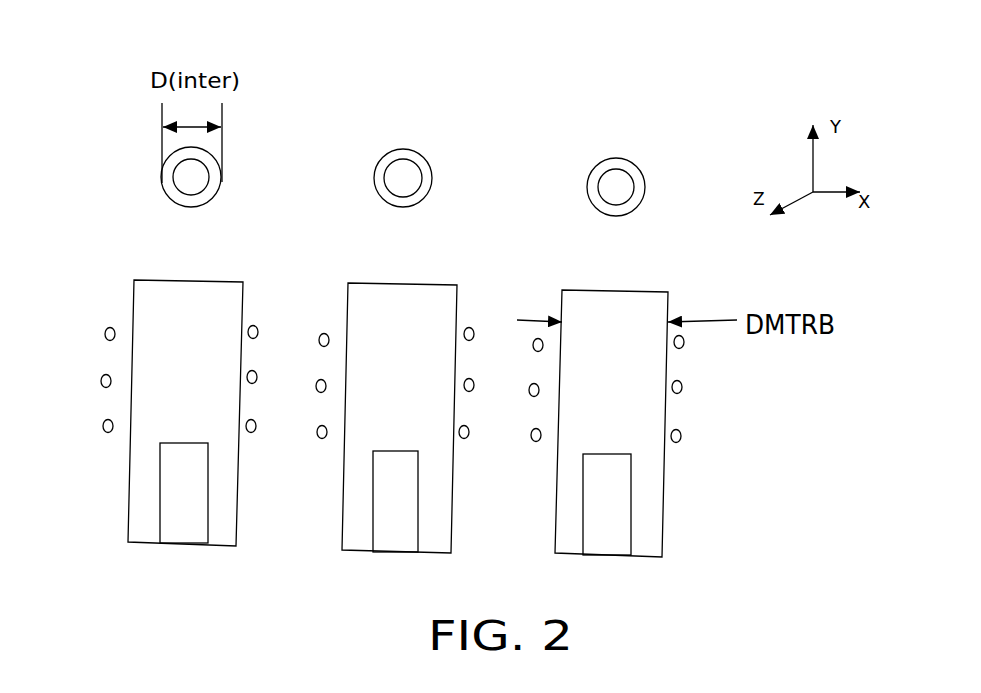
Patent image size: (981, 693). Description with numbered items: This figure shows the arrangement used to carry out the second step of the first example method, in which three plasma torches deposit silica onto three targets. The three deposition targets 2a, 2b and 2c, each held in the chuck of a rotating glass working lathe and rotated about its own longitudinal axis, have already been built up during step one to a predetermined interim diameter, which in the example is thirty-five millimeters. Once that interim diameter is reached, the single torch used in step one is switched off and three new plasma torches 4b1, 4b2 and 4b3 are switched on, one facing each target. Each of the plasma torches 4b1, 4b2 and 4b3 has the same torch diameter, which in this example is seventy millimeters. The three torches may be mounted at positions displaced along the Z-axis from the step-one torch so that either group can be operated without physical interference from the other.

The deposition target 2a is at (232, 158).
The deposition target 2b is at (368, 177).
The deposition target 2c is at (588, 175).
The plasma torch 4b1 is at (113, 535).
The plasma torch 4b2 is at (333, 502).
The plasma torch 4b3 is at (670, 502).